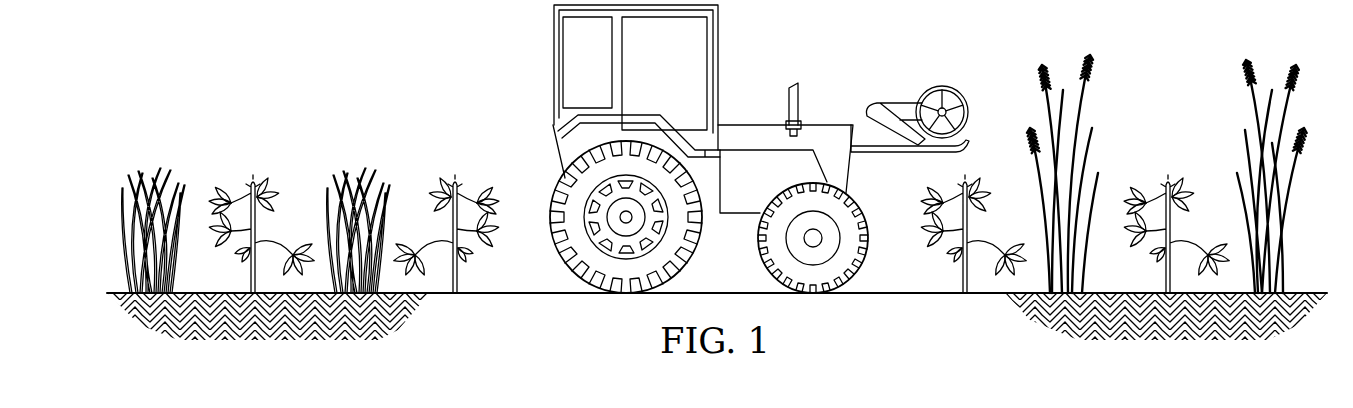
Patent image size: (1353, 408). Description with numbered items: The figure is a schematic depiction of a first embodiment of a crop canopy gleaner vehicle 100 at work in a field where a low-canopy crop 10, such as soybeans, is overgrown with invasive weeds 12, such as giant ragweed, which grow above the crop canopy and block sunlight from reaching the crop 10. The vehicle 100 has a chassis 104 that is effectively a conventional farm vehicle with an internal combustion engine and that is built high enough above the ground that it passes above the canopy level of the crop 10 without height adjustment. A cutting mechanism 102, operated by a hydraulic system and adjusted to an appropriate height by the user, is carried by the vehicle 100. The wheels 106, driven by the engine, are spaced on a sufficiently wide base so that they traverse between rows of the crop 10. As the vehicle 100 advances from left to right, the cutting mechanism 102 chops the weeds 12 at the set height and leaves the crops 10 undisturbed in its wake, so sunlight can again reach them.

The crop 10 is at (438, 190).
The weeds 12 is at (128, 212).
The crop canopy gleaner vehicle 100 is at (723, 149).
The cutting mechanism 102 is at (946, 86).
The chassis 104 is at (556, 150).
The wheels 106 is at (558, 246).